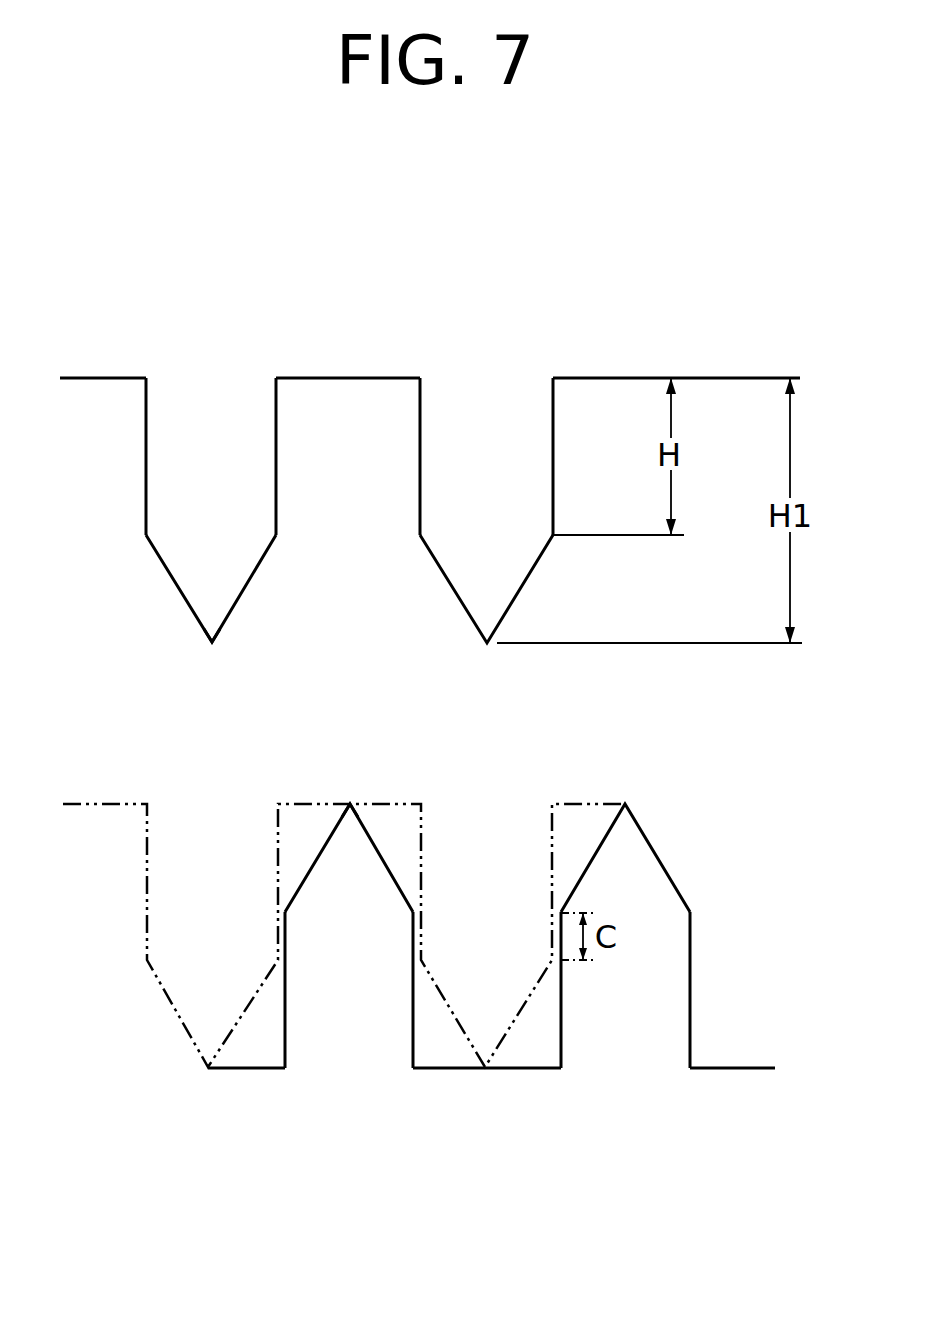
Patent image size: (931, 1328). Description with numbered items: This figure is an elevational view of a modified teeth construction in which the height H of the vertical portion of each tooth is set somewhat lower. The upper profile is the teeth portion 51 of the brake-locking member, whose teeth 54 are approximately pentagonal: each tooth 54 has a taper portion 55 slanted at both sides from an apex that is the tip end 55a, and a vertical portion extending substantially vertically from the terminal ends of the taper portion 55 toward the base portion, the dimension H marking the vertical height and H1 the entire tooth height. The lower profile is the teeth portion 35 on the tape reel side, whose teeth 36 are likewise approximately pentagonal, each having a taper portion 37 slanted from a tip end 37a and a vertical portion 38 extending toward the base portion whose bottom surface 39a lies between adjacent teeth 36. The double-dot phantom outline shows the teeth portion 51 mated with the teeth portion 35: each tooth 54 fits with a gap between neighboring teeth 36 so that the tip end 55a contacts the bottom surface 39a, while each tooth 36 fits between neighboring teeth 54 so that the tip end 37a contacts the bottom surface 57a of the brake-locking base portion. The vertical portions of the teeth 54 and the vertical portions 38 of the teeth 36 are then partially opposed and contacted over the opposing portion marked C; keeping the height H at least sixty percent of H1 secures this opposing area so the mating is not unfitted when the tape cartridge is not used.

The teeth portion 51 is at (430, 423).
The teeth 54 is at (203, 445).
The taper portion 55 is at (437, 570).
The tip end 55a is at (206, 646).
The bottom surface 57a is at (312, 805).
The tip end 37a is at (351, 803).
The taper portion 37 is at (383, 858).
The vertical portion 38 is at (413, 993).
The teeth 36 is at (354, 1040).
The teeth portion 35 is at (508, 982).
The bottom surface 39a is at (547, 1068).